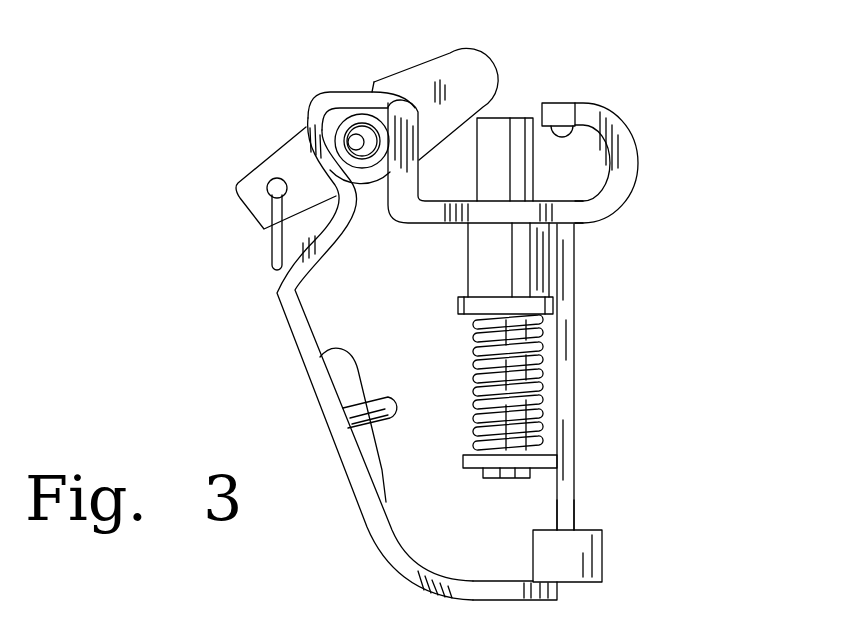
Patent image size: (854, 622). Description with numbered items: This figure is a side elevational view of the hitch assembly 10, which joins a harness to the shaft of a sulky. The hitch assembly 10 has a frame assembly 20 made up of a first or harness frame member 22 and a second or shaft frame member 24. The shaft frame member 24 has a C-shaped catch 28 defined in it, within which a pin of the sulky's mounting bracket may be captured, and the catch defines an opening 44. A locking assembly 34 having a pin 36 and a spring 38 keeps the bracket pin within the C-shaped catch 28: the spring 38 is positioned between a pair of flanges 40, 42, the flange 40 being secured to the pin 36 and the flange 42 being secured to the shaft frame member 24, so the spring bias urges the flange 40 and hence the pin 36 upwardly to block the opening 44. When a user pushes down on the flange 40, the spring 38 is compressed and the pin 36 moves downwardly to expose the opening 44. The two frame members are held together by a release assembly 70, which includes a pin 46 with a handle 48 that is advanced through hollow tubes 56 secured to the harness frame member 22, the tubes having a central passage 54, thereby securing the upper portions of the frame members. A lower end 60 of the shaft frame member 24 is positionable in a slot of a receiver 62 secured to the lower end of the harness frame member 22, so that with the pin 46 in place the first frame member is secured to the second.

The hitch assembly 10 is at (705, 95).
The frame assembly 20 is at (573, 310).
The harness frame member 22 is at (407, 572).
The shaft frame member 24 is at (573, 382).
The C-shaped catch 28 is at (630, 165).
The locking assembly 34 is at (518, 110).
The pin 36 is at (477, 178).
The spring 38 is at (473, 395).
The flange 40 is at (458, 305).
The flange 42 is at (477, 468).
The opening 44 is at (557, 118).
The pin 46 is at (362, 132).
The handle 48 is at (432, 72).
The central passage 54 is at (350, 140).
The hollow tubes 56 is at (363, 162).
The lower end 60 is at (573, 520).
The receiver 62 is at (603, 560).
The release assembly 70 is at (322, 85).